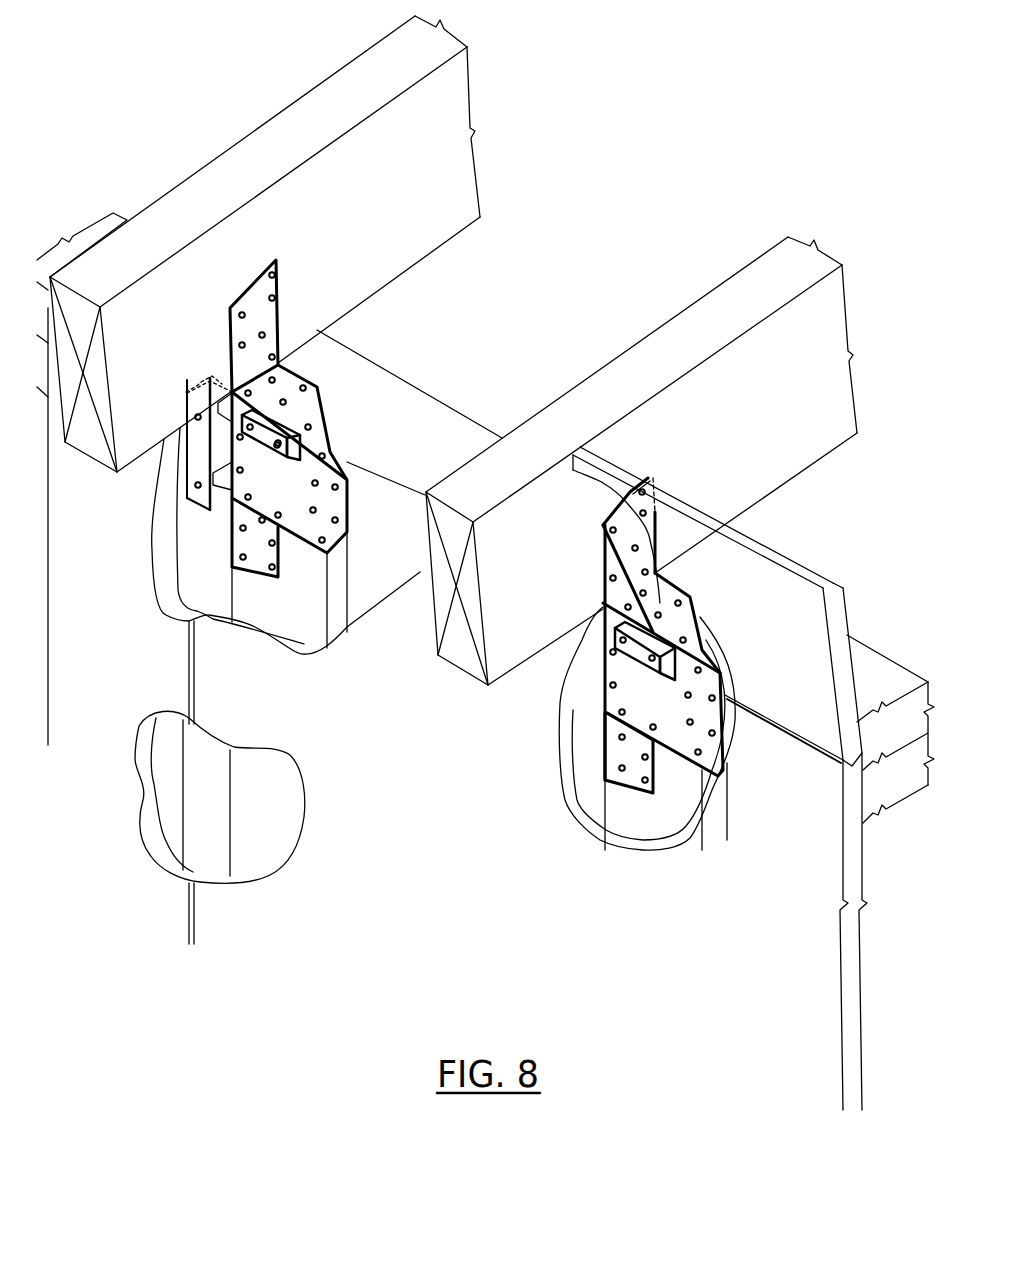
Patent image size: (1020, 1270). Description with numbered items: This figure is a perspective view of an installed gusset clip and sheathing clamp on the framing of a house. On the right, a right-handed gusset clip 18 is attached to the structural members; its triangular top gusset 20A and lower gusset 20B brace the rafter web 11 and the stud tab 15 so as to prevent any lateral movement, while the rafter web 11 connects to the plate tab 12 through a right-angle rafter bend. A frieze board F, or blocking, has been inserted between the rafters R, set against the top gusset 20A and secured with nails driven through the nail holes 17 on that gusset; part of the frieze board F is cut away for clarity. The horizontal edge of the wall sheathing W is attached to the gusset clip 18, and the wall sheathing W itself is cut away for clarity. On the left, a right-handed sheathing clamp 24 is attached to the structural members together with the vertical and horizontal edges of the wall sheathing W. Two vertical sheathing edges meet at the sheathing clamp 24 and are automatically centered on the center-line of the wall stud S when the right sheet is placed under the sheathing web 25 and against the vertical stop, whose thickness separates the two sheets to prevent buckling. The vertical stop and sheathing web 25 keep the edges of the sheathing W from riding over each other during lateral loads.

The rafter R is at (408, 243).
The wall sheathing W is at (162, 578).
The wall stud S is at (201, 802).
The frieze board F is at (807, 643).
The rafter web 11 is at (273, 346).
The plate tab 12 is at (317, 390).
The stud tab 15 is at (255, 568).
The nail holes 17 is at (660, 577).
The gusset clip 18 is at (705, 678).
The top gusset 20A is at (620, 580).
The lower gusset 20B is at (613, 743).
The sheathing clamp 24 is at (337, 448).
The sheathing web 25 is at (191, 482).